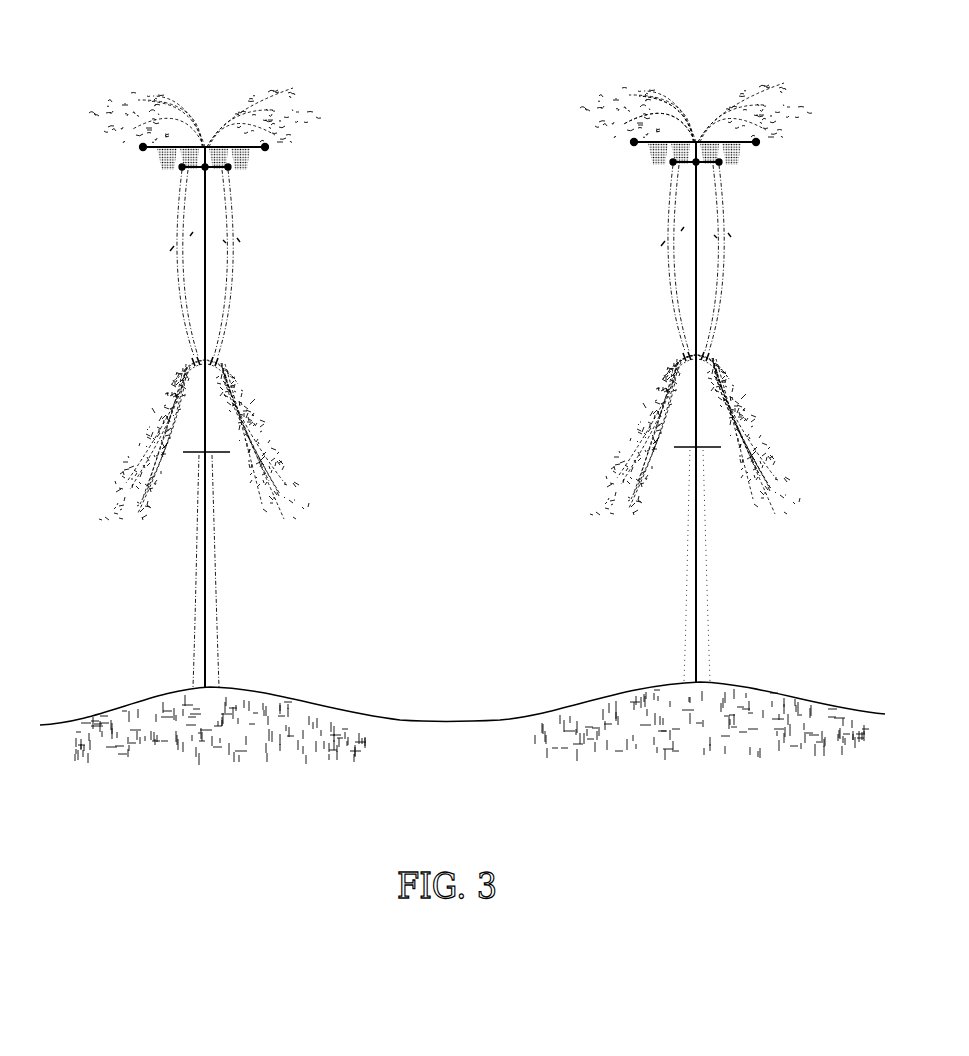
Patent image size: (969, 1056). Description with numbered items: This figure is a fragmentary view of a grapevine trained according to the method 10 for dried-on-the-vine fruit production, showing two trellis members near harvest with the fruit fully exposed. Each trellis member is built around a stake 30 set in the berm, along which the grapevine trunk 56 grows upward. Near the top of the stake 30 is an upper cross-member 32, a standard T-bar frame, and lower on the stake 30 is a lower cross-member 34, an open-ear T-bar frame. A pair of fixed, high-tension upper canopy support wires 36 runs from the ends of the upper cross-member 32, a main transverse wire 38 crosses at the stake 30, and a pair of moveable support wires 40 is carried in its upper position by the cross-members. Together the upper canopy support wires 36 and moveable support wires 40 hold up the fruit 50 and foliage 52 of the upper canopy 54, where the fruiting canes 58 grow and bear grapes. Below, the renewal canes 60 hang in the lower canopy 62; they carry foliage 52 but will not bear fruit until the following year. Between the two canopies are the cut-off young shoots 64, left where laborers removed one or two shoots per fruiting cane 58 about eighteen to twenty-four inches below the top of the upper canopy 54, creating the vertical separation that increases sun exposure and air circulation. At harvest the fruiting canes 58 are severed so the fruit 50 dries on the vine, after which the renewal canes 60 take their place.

The method for raising plants for dried-on-the-vine fruit production 10 is at (470, 78).
The stake 30 is at (203, 554).
The upper cross-member 32 is at (257, 153).
The lower cross-member 34 is at (218, 453).
The upper canopy support wires 36 is at (262, 142).
The main transverse wire 38 is at (208, 171).
The moveable support wires 40 is at (226, 171).
The fruit 50 is at (653, 163).
The foliage 52 is at (262, 103).
The upper canopy 54 is at (612, 103).
The grapevine trunk 56 is at (217, 618).
The fruiting canes 58 is at (670, 282).
The renewal canes 60 is at (740, 350).
The lower canopy 62 is at (770, 433).
The cut-off young shoots 64 is at (725, 230).